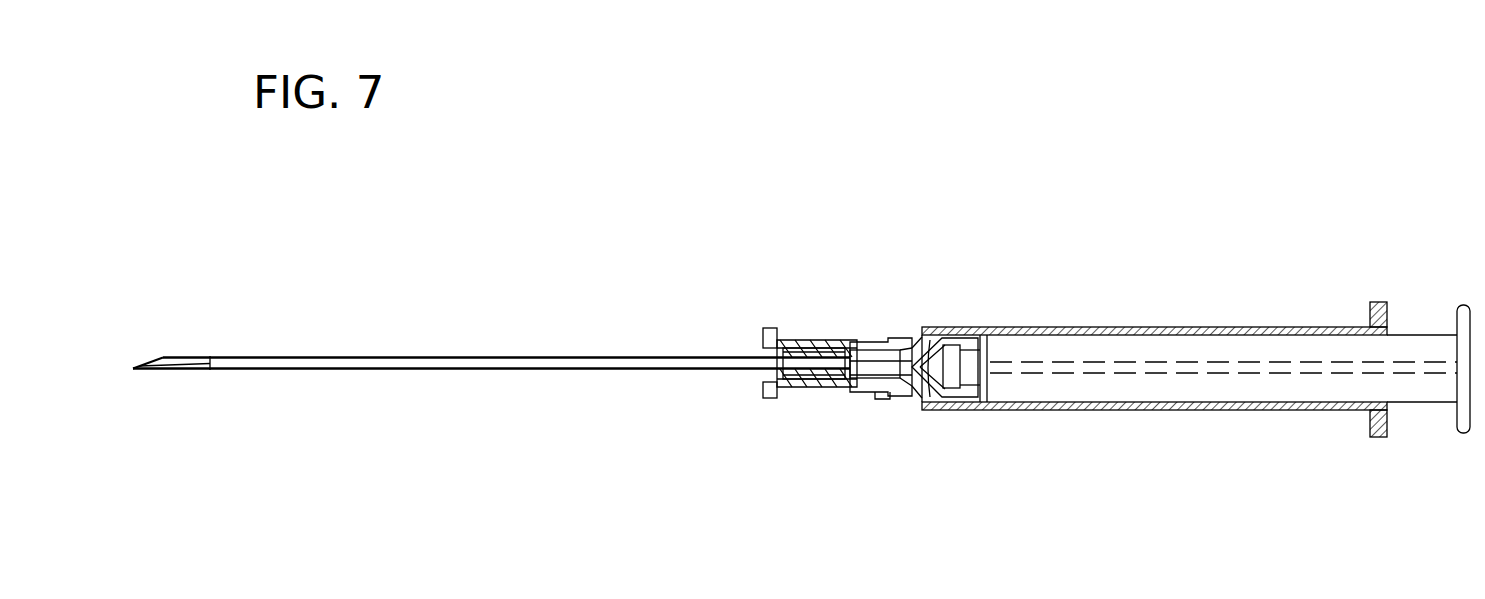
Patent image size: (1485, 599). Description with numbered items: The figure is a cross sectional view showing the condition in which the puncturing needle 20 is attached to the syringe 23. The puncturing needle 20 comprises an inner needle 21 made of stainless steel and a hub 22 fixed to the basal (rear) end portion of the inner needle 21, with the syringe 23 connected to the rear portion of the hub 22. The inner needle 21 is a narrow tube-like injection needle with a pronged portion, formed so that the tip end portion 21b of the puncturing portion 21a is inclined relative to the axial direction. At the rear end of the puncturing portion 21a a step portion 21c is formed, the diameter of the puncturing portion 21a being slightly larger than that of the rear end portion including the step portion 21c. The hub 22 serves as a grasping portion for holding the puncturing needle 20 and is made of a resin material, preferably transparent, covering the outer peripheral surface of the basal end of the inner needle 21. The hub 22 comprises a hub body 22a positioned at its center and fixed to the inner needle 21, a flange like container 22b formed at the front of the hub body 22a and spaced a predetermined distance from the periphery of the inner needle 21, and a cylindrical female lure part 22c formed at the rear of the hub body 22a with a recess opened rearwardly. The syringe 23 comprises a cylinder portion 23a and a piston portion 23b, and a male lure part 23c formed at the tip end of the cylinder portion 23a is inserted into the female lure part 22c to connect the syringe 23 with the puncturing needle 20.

The puncturing needle 20 is at (868, 296).
The inner needle 21 is at (388, 357).
The puncturing portion 21a is at (158, 372).
The tip end portion 21b is at (135, 367).
The step portion 21c is at (210, 362).
The hub 22 is at (745, 447).
The hub body 22a is at (820, 387).
The flange like container 22b is at (769, 399).
The female lure part 22c is at (882, 399).
The syringe 23 is at (1425, 275).
The cylinder portion 23a is at (1352, 328).
The piston portion 23b is at (1407, 335).
The male lure part 23c is at (897, 348).